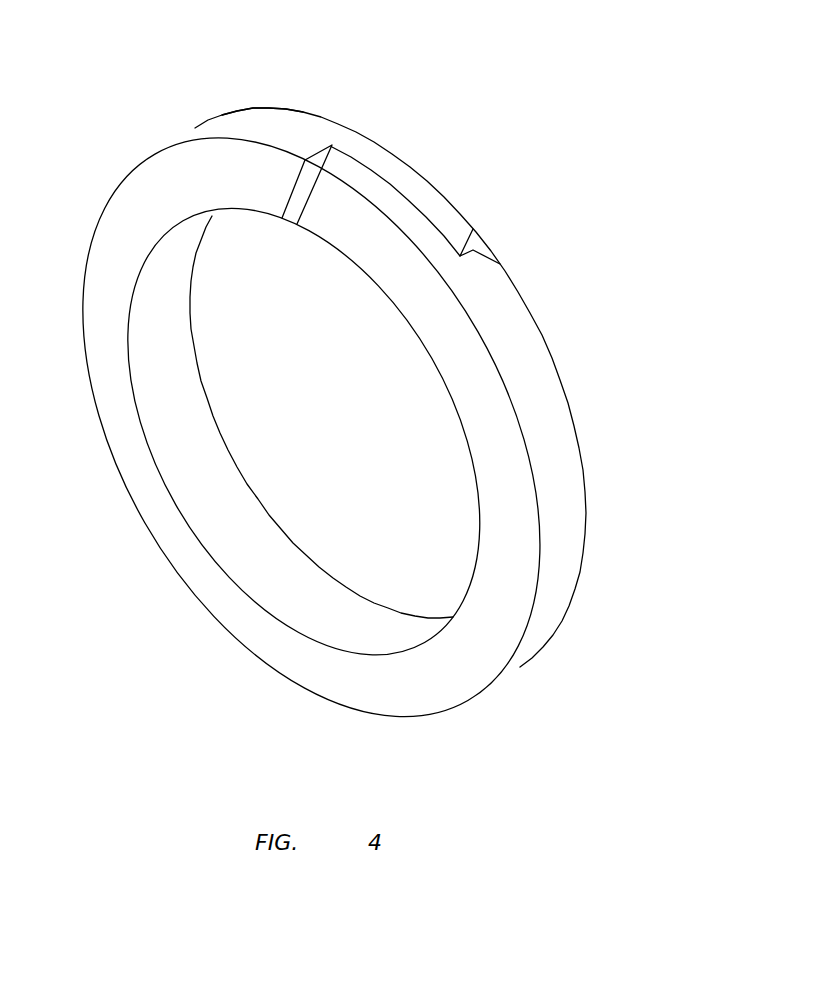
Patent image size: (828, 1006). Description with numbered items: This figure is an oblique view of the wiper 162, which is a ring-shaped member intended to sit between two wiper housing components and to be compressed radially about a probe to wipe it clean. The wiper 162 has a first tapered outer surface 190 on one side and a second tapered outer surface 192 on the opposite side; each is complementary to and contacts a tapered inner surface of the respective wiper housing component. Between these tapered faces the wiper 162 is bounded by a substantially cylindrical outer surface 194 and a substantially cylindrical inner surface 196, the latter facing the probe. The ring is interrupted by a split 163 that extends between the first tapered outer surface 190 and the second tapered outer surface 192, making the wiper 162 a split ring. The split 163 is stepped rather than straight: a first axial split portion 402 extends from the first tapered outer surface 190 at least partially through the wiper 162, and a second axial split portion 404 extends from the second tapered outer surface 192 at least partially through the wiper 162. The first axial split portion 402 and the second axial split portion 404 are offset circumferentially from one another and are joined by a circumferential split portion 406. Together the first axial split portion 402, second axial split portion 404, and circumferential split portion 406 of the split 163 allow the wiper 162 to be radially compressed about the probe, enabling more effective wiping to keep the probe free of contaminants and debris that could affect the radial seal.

The wiper 162 is at (575, 60).
The split 163 is at (397, 231).
The first tapered outer surface 190 is at (468, 424).
The second tapered outer surface 192 is at (560, 374).
The substantially cylindrical outer surface 194 is at (264, 112).
The substantially cylindrical inner surface 196 is at (226, 448).
The first axial split portion 402 is at (292, 212).
The second axial split portion 404 is at (478, 238).
The circumferential split portion 406 is at (416, 208).